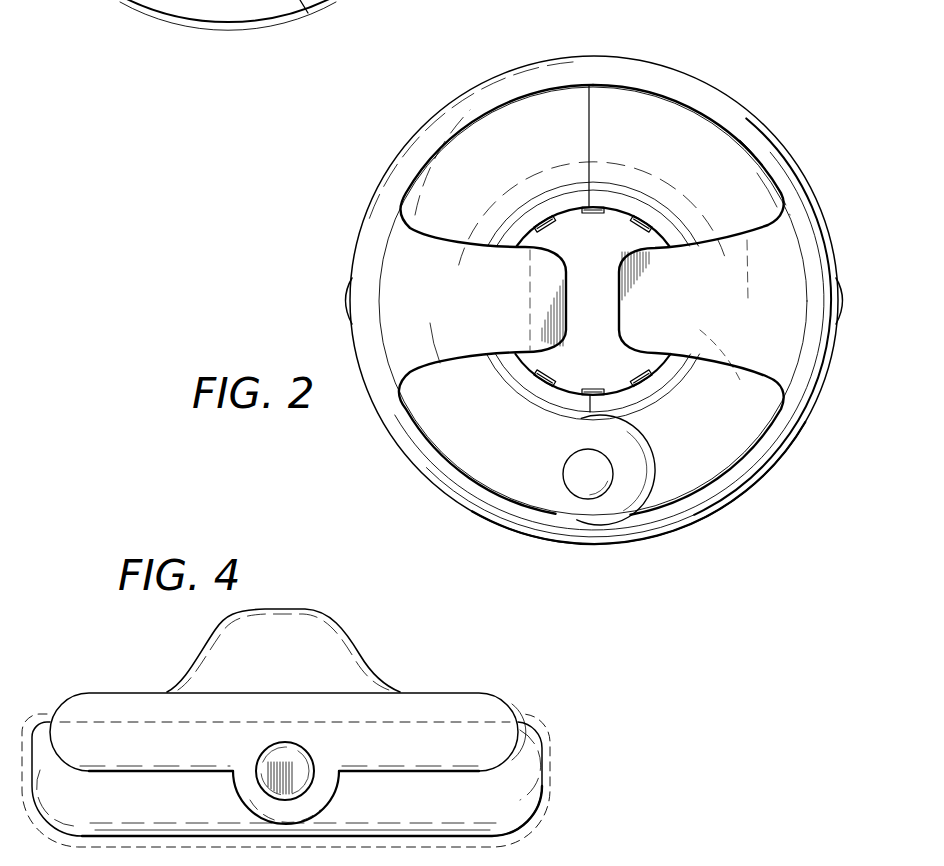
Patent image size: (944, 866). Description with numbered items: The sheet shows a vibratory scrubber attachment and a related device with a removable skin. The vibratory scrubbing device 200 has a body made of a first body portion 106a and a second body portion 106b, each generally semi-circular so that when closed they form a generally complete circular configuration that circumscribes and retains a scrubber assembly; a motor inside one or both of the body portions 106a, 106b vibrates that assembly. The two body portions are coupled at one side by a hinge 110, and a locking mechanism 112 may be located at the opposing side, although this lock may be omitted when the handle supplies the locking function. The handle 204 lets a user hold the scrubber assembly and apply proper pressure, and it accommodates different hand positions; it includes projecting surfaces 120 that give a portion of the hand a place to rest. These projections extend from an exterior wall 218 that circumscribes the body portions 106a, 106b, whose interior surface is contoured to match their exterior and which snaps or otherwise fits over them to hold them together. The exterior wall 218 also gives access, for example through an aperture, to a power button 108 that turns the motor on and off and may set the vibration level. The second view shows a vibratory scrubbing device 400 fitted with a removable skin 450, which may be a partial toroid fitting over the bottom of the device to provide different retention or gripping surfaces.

In FIG. 2, the vibratory scrubbing device 200 is at (328, 215).
In FIG. 2, the exterior wall 218 is at (633, 54).
In FIG. 2, the locking mechanism 112 is at (587, 108).
In FIG. 2, the first body portion 106a is at (717, 157).
In FIG. 2, the second body portion 106b is at (432, 187).
In FIG. 2, the power button 108 is at (840, 306).
In FIG. 2, the projecting surfaces 120 is at (693, 318).
In FIG. 2, the handle 204 is at (614, 345).
In FIG. 2, the hinge 110 is at (597, 478).
In FIG. 4, the vibratory scrubbing device 400 is at (476, 662).
In FIG. 4, the removable skin 450 is at (541, 736).